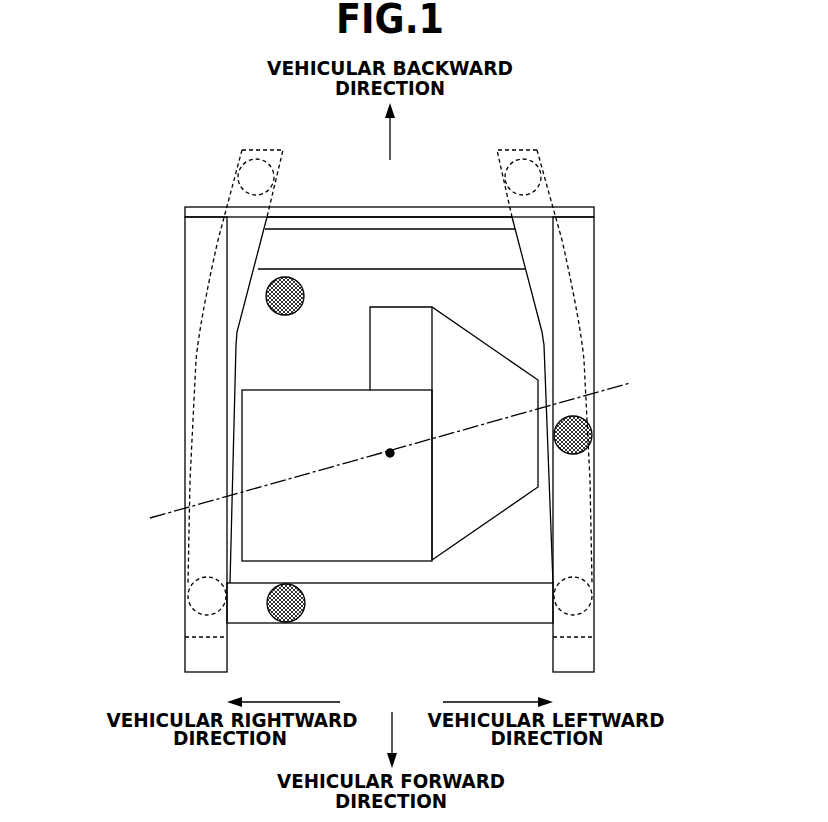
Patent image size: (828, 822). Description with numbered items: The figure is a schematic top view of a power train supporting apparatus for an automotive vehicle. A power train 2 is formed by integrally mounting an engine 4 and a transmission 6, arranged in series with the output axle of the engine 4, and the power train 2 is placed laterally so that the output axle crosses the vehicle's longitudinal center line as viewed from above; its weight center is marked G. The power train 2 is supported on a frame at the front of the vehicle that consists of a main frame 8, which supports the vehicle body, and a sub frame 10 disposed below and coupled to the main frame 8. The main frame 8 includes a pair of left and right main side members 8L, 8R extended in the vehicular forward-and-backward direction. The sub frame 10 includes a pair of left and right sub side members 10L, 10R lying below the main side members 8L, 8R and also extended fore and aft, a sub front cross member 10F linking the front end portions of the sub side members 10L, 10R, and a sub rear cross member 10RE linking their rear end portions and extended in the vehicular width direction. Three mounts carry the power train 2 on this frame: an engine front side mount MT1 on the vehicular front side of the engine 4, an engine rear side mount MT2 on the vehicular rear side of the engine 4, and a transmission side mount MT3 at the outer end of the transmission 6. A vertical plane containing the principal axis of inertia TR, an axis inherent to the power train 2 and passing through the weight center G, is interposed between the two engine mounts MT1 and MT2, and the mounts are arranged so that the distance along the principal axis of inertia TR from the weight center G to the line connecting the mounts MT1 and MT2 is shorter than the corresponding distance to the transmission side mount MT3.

The power train 2 is at (390, 489).
The engine 4 is at (337, 475).
The transmission 6 is at (489, 522).
The main frame 8 is at (596, 252).
The right main side member 8R is at (200, 263).
The left main side member 8L is at (583, 297).
The sub frame 10 is at (425, 228).
The sub rear cross member 10RE is at (380, 247).
The sub front cross member 10F is at (387, 605).
The right sub side member 10R is at (208, 377).
The left sub side member 10L is at (572, 526).
The engine front side mount MT1 is at (286, 610).
The engine rear side mount MT2 is at (272, 298).
The transmission side mount MT3 is at (578, 438).
The principal axis of inertia TR is at (282, 483).
The weight center G is at (390, 453).